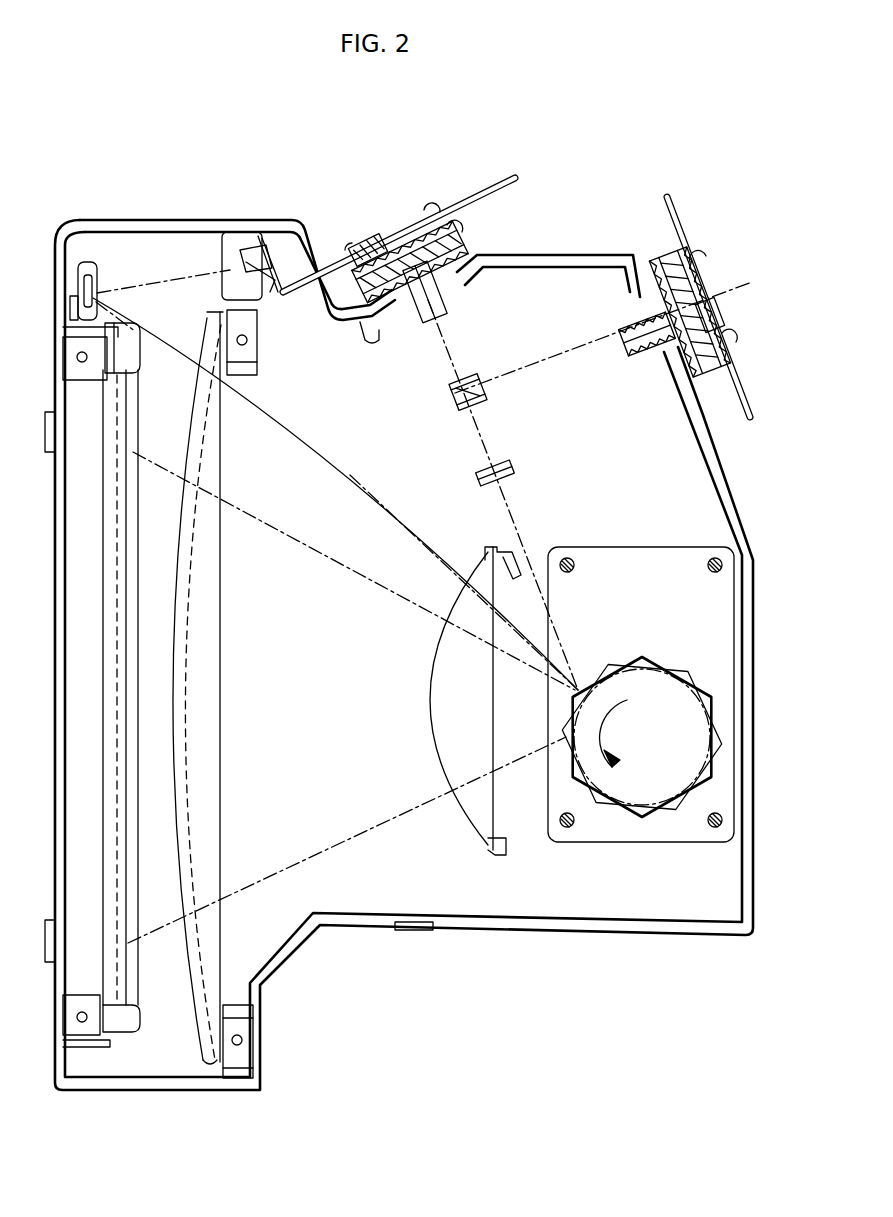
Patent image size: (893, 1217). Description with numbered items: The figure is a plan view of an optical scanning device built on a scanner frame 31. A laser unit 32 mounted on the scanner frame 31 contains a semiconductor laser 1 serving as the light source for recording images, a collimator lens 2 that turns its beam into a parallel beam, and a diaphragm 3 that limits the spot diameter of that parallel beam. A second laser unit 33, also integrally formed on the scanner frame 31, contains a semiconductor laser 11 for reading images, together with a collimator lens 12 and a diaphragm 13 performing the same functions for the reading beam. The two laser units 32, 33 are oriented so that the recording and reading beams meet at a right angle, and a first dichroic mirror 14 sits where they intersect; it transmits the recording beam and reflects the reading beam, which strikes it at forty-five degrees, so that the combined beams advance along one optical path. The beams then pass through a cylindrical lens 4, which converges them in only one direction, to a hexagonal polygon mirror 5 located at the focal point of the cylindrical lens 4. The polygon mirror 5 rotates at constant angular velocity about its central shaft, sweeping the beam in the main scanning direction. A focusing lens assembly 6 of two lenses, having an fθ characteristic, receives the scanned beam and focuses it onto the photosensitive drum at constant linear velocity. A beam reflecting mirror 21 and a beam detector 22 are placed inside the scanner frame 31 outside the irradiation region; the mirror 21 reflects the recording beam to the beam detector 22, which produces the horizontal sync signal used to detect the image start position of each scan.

The semiconductor laser 1 is at (423, 242).
The collimator lens 2 is at (395, 252).
The diaphragm 3 is at (445, 310).
The cylindrical lens 4 is at (517, 467).
The hexagonal polygon mirror 5 is at (712, 703).
The focusing lens assembly 6 is at (432, 697).
The semiconductor laser 11 is at (713, 318).
The collimator lens 12 is at (705, 288).
The diaphragm 13 is at (627, 343).
The first dichroic mirror 14 is at (455, 393).
The beam reflecting mirror 21 is at (92, 262).
The beam detector 22 is at (288, 232).
The scanner frame 31 is at (747, 830).
The laser unit 32 is at (437, 192).
The laser unit 33 is at (700, 228).